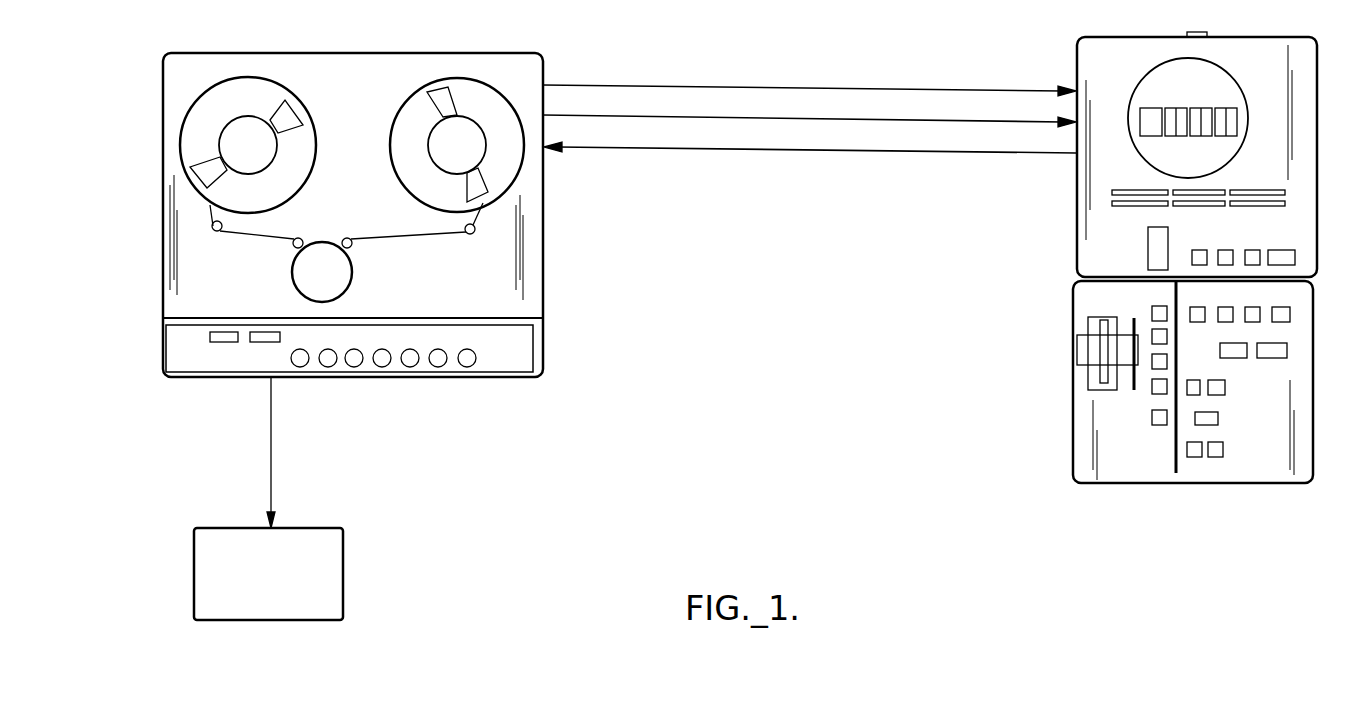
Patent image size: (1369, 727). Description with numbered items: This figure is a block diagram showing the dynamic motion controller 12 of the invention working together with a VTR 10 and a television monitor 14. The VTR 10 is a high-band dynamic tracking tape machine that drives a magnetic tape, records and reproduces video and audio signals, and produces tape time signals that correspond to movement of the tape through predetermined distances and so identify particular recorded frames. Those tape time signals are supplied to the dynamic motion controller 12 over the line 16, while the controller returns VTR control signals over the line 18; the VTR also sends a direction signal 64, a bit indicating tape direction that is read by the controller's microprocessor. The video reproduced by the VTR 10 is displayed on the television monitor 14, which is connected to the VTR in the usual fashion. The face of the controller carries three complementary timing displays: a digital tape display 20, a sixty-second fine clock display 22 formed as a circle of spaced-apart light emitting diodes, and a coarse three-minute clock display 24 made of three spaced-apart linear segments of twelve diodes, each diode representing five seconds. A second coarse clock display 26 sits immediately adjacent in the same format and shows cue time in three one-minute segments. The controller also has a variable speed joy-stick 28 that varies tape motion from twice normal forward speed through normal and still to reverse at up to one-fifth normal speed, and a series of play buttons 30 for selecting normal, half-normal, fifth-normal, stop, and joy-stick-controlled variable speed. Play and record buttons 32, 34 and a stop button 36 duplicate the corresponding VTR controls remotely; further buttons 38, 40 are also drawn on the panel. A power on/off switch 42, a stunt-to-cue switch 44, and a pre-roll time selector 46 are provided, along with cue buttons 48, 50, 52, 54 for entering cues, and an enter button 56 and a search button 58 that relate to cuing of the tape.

The VTR 10 is at (545, 322).
The dynamic motion controller 12 is at (1073, 378).
The television monitor 14 is at (345, 574).
The line 16 is at (938, 89).
The line 18 is at (936, 152).
The digital tape display 20 is at (1228, 110).
The 60-second fine clock display 22 is at (1140, 84).
The coarse clock, three-minute display 24 is at (1285, 193).
The second coarse clock display 26 is at (1285, 204).
The variable speed joy-stick 28 is at (1102, 326).
The play buttons 30 is at (1160, 440).
The play button 32 is at (1195, 380).
The record button 34 is at (1225, 392).
The stop button 36 is at (1218, 418).
The push button 38 is at (1194, 457).
The push button 40 is at (1215, 457).
The power on/off switch 42 is at (1196, 250).
The stunt-to-cue switch 44 is at (1226, 250).
The pre-roll time selector 46 is at (1258, 250).
The cue button 48 is at (1195, 307).
The cue button 50 is at (1225, 307).
The cue button 52 is at (1255, 322).
The cue button 54 is at (1284, 307).
The enter button 56 is at (1288, 350).
The search button 58 is at (1242, 358).
The direction signal 64 is at (938, 121).